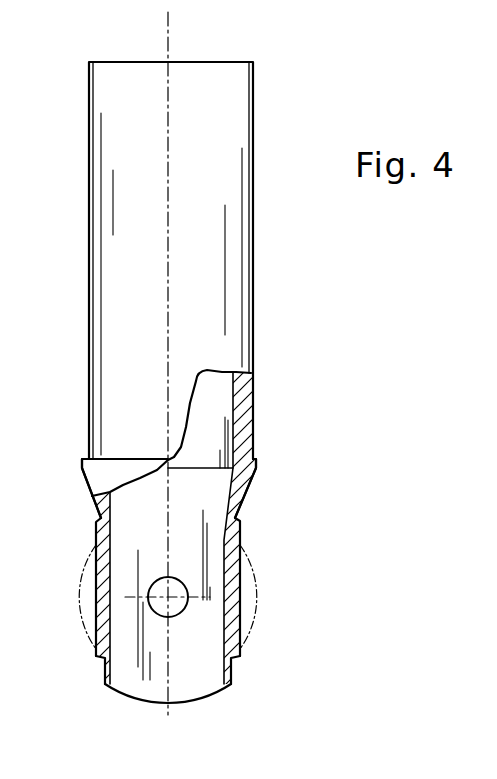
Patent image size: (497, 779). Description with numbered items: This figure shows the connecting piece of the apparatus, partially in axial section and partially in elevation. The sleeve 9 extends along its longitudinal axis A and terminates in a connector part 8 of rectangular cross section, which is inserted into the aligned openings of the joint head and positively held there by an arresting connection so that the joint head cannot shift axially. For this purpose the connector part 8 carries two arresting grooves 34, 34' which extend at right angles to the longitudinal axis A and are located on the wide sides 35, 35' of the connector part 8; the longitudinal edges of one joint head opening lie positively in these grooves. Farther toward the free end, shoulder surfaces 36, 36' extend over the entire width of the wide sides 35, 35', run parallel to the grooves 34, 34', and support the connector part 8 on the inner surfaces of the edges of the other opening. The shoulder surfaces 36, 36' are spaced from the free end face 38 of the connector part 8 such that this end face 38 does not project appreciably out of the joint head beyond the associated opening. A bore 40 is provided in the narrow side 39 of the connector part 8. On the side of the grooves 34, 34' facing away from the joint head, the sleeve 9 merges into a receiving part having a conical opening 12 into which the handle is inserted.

The longitudinal axis A is at (172, 43).
The connector part 8 is at (227, 573).
The sleeve 9 is at (254, 295).
The conical opening 12 is at (211, 410).
The arresting groove 34 is at (270, 488).
The arresting groove 34' is at (66, 491).
The wide side 35 is at (291, 593).
The wide side 35' is at (61, 594).
The shoulder surface 36 is at (269, 667).
The shoulder surface 36' is at (65, 658).
The free end face 38 is at (186, 703).
The narrow side 39 is at (188, 651).
The bore 40 is at (160, 586).